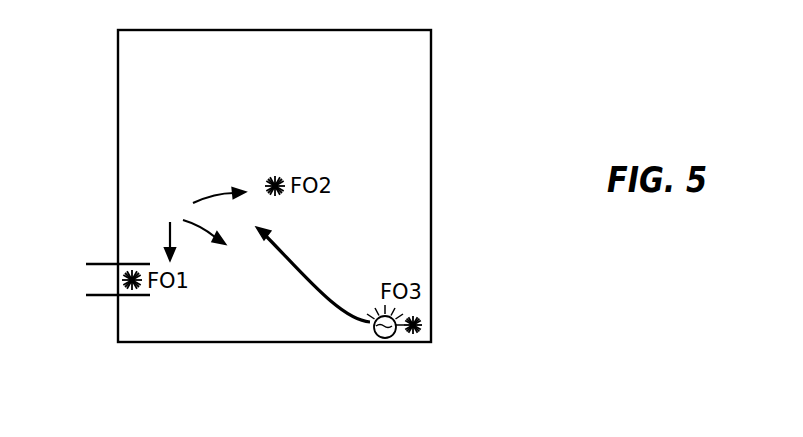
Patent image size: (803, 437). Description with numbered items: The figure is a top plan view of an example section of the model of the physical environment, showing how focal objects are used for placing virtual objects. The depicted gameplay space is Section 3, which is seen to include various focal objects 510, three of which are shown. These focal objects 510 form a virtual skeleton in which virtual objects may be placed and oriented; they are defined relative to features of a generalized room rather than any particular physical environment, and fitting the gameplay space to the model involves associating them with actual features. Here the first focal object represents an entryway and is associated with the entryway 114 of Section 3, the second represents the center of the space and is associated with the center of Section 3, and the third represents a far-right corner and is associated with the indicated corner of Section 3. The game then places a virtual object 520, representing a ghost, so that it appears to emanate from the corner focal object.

The Section 3 is at (274, 186).
The entryway 114 is at (98, 279).
The focal objects 510 is at (196, 224).
The virtual object 520 is at (385, 338).